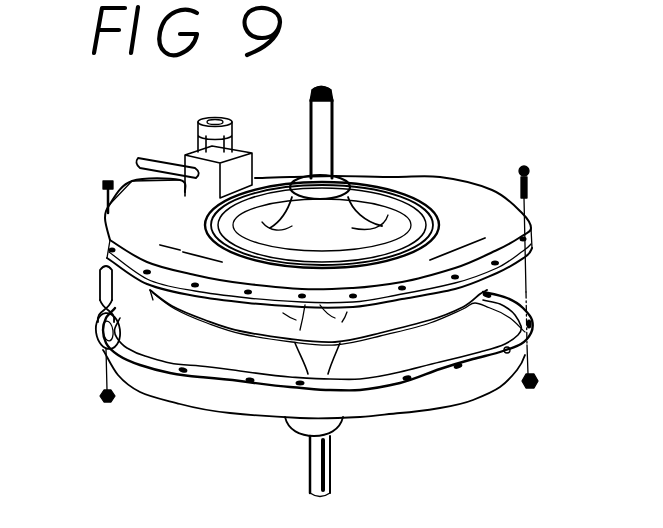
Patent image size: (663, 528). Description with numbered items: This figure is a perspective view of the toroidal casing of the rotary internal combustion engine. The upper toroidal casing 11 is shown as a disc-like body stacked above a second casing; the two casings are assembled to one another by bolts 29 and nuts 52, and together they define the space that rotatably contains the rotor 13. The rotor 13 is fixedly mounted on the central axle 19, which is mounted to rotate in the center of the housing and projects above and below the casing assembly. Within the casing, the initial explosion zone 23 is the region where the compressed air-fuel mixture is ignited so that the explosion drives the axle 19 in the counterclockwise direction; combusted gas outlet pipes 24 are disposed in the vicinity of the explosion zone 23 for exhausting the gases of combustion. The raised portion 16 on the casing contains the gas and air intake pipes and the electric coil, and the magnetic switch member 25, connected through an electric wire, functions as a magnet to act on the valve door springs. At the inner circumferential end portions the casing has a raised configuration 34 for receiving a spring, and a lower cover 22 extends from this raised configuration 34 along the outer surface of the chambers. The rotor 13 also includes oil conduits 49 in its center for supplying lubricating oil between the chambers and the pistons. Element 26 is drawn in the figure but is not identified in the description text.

The upper toroidal casing 11 is at (446, 172).
The rotor 13 is at (263, 324).
The raised portion 16 is at (123, 195).
The axle 19 is at (334, 125).
The lower cover 22 is at (365, 212).
The initial explosion zone 23 is at (246, 170).
The combusted gas outlet pipe 24 is at (150, 158).
The magnetic switch member 25 is at (198, 117).
The fitting top 26 is at (215, 121).
The bolt 29 is at (102, 186).
The raised configuration 34 is at (440, 232).
The oil conduit 49 is at (331, 85).
The nut 52 is at (538, 386).